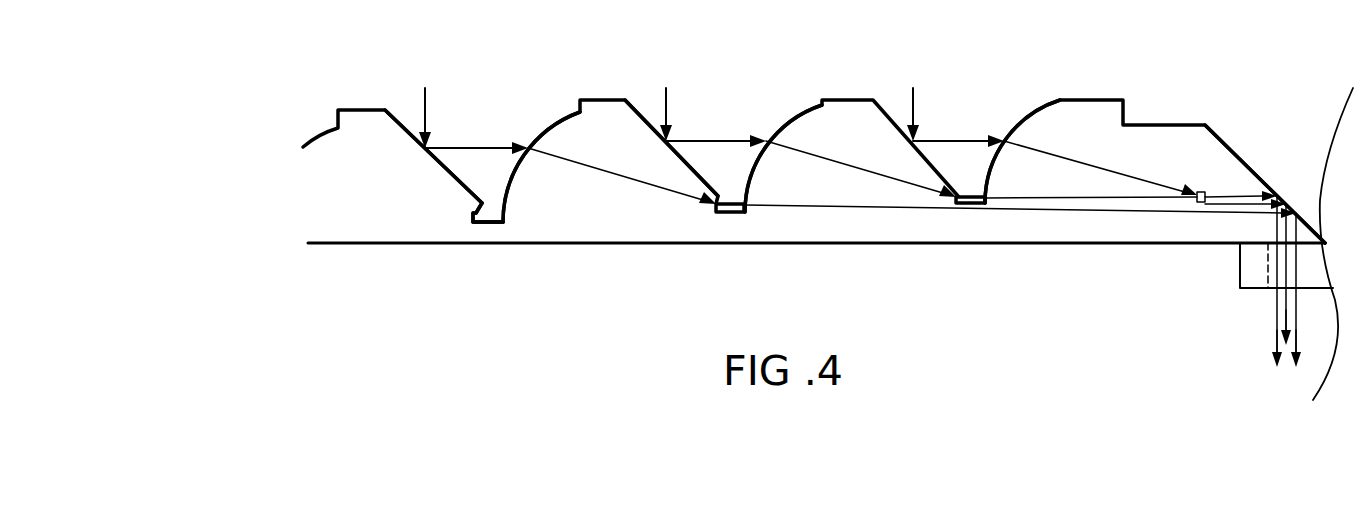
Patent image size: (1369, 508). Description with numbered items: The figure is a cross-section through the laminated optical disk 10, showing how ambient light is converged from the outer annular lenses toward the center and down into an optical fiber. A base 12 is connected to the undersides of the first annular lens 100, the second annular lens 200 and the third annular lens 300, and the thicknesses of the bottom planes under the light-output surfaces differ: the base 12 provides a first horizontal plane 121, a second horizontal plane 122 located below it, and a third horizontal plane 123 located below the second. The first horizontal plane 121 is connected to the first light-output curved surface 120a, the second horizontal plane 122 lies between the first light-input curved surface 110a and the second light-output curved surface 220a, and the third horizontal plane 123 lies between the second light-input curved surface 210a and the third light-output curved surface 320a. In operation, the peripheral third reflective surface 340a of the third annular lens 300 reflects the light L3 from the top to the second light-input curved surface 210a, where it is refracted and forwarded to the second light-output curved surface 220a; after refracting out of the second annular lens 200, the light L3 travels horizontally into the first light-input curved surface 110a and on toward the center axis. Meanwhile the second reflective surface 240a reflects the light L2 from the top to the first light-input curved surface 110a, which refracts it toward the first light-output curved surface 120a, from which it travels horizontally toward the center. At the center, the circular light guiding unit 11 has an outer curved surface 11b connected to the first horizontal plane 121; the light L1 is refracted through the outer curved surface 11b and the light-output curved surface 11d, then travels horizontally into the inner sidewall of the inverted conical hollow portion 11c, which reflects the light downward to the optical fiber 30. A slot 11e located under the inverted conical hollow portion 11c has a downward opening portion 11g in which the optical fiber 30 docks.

The laminated optical disk 10 is at (1195, 70).
The circular light guiding unit 11 is at (1080, 122).
The outer curved surface 11b is at (1010, 130).
The inverted conical hollow portion 11c is at (1262, 197).
The light-output curved surface 11d is at (1200, 192).
The slot 11e is at (1238, 258).
The downward opening portion 11g is at (1262, 297).
The base 12 is at (853, 232).
The optical fiber 30 is at (1270, 330).
The first annular lens 100 is at (840, 122).
The first light-input curved surface 110a is at (802, 112).
The first light-output curved surface 120a is at (958, 197).
The first horizontal plane 121 is at (962, 205).
The second annular lens 200 is at (603, 122).
The second light-input curved surface 210a is at (560, 118).
The second light-output curved surface 220a is at (717, 204).
The second horizontal plane 122 is at (725, 212).
The second reflective surface 240a is at (652, 127).
The third annular lens 300 is at (363, 132).
The third light-output curved surface 320a is at (477, 213).
The third reflective surface 340a is at (407, 130).
The third horizontal plane 123 is at (487, 222).
The light L1 is at (1050, 130).
The light L2 is at (806, 130).
The light L3 is at (565, 135).